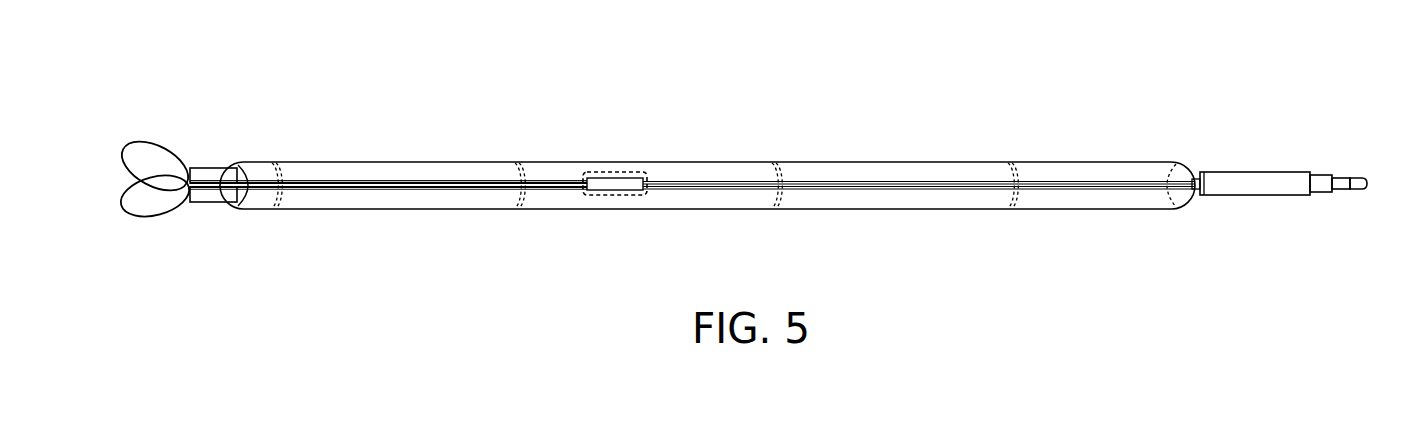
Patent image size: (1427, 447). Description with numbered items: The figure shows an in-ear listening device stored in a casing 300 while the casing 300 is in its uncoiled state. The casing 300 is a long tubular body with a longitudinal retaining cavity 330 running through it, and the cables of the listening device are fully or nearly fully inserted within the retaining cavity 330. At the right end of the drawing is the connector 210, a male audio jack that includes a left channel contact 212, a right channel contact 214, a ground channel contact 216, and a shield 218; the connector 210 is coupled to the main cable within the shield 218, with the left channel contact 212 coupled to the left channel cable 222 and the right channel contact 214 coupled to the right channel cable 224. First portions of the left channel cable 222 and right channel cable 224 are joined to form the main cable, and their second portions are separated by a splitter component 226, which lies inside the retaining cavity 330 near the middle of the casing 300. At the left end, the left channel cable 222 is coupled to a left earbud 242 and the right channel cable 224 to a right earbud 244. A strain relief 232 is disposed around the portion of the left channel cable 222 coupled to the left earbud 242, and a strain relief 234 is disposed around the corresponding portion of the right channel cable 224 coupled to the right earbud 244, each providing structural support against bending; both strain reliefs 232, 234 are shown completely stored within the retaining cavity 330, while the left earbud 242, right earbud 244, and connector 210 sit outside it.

The casing 300 is at (667, 138).
The connector 210 is at (1307, 218).
The left channel contact 212 is at (1363, 188).
The right channel contact 214 is at (1338, 188).
The ground channel contact 216 is at (1317, 188).
The shield 218 is at (1235, 188).
The left channel cable 222 is at (335, 178).
The right channel cable 224 is at (345, 190).
The splitter component 226 is at (608, 172).
The strain relief 232 is at (210, 173).
The strain relief 234 is at (212, 192).
The left earbud 242 is at (155, 150).
The right earbud 244 is at (153, 203).
The retaining cavity 330 is at (712, 180).